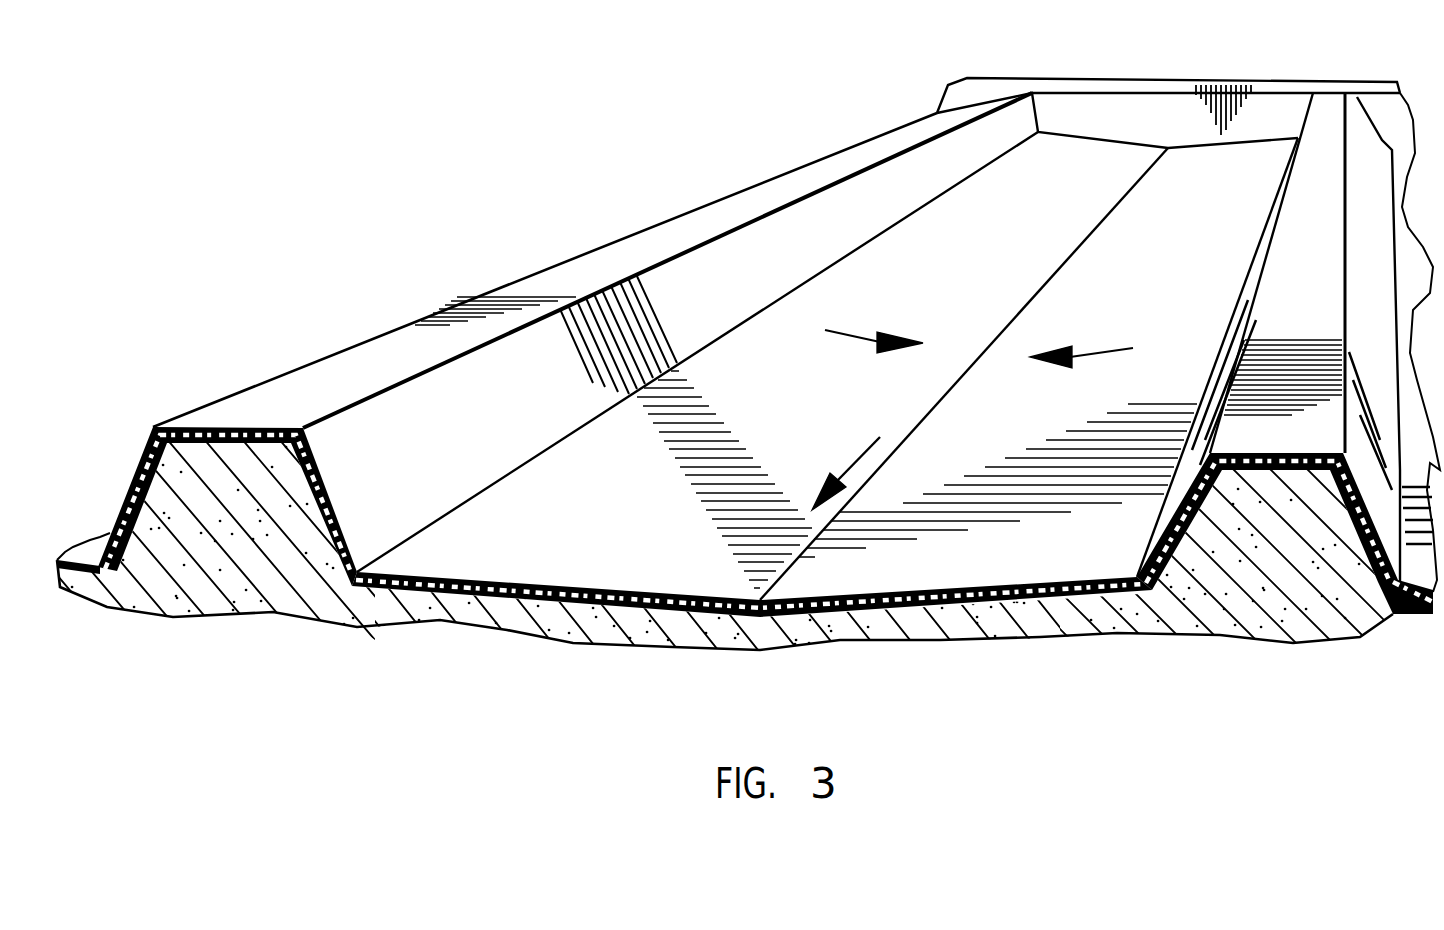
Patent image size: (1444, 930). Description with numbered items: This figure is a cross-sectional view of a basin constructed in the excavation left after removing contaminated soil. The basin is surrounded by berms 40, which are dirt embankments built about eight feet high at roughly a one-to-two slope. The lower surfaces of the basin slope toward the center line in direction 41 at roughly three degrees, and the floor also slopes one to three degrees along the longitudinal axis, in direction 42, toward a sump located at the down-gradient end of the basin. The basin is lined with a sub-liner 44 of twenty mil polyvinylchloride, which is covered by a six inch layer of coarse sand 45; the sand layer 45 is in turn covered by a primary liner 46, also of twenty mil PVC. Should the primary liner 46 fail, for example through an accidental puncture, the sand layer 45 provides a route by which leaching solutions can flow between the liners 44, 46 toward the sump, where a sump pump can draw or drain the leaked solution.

The berms 40 is at (1297, 300).
The direction of lower surface slope toward center line 41 is at (867, 333).
The longitudinal axis direction 42 is at (853, 467).
The sub-liner 44 is at (1007, 603).
The coarse sand layer 45 is at (1060, 600).
The primary liner 46 is at (1098, 582).